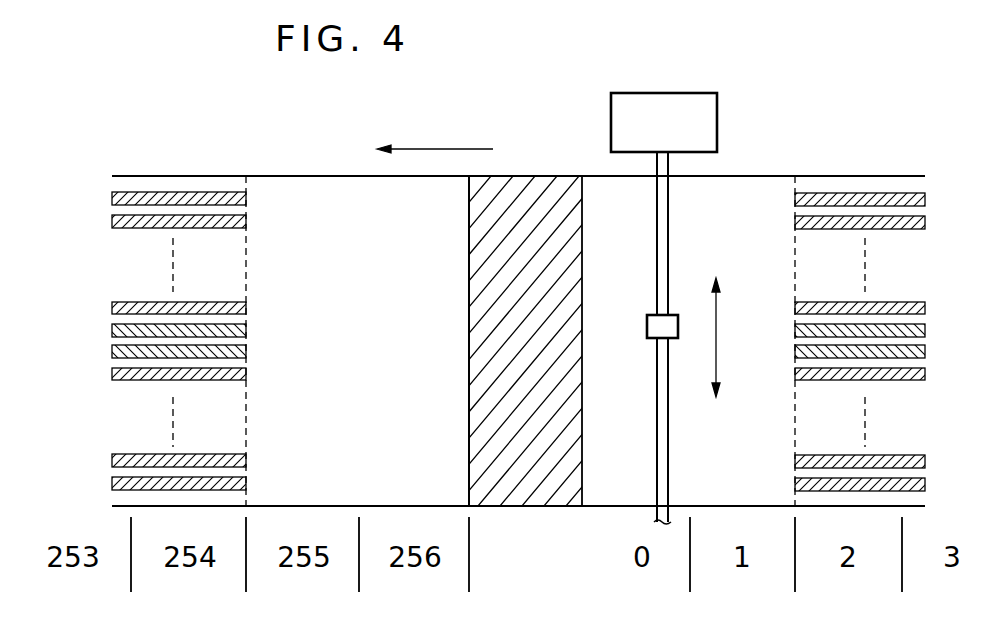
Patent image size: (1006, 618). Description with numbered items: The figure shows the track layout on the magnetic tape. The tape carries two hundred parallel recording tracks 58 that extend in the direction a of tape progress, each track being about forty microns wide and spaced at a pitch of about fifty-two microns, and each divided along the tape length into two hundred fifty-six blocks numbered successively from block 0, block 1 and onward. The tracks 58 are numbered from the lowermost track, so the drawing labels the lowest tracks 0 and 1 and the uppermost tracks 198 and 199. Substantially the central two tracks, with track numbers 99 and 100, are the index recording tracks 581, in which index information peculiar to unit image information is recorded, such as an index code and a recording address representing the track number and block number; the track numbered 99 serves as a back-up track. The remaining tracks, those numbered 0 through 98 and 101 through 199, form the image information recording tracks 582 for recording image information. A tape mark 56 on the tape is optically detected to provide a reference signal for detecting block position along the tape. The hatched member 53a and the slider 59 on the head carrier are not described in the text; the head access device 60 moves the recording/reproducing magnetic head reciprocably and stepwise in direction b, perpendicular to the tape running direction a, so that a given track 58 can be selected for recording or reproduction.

The magnetic head 53a is at (522, 176).
The tape mark 56 is at (469, 331).
The recording tracks 58 is at (169, 192).
The index recording tracks 581 is at (108, 324).
The image information recording tracks 582 is at (108, 192).
The slider 59 is at (647, 328).
The head access device 60 is at (719, 113).
The direction of tape progress a is at (435, 137).
The direction perpendicular to the tape running direction b is at (706, 337).
The track number 0 is at (518, 484).
The track number 1 is at (518, 460).
The track number 98 is at (518, 376).
The track number 99 is at (518, 353).
The track number 100 is at (518, 330).
The track number 101 is at (518, 308).
The track number 198 is at (518, 221).
The track number 199 is at (518, 198).